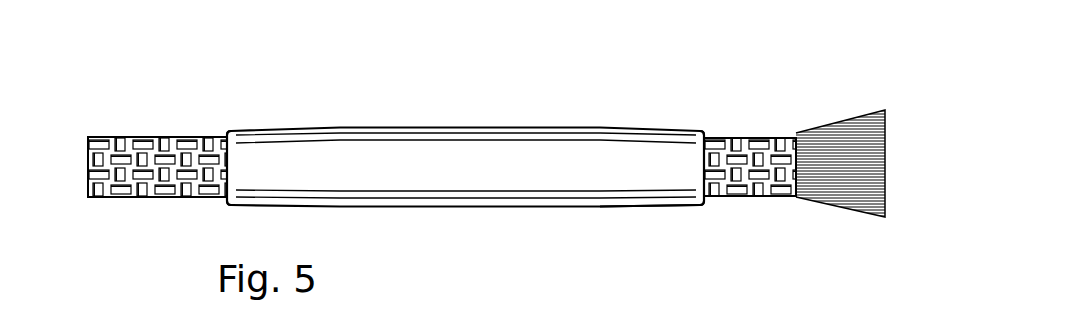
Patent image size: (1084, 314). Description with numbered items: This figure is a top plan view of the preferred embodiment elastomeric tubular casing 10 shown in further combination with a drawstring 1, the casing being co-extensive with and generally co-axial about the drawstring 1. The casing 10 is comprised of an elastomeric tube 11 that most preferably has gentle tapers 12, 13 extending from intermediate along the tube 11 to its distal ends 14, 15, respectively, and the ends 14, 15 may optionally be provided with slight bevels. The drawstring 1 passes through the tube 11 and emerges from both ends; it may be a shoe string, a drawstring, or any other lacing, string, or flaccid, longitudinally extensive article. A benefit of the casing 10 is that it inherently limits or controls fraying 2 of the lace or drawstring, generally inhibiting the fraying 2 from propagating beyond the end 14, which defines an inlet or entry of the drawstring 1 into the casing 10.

The elastomeric tubular casing 10 is at (696, 55).
The drawstring 1 is at (160, 143).
The fraying 2 is at (840, 128).
The elastomeric tube 11 is at (495, 185).
The gentle taper 12 is at (655, 205).
The gentle taper 13 is at (264, 130).
The distal end 14 is at (706, 200).
The distal end 15 is at (226, 199).